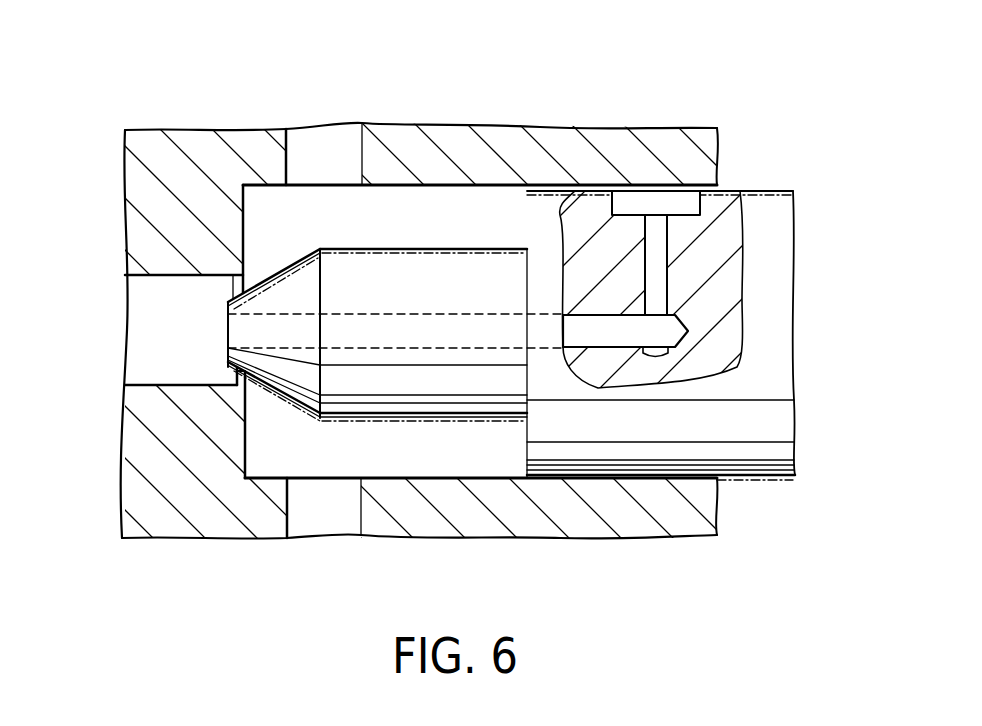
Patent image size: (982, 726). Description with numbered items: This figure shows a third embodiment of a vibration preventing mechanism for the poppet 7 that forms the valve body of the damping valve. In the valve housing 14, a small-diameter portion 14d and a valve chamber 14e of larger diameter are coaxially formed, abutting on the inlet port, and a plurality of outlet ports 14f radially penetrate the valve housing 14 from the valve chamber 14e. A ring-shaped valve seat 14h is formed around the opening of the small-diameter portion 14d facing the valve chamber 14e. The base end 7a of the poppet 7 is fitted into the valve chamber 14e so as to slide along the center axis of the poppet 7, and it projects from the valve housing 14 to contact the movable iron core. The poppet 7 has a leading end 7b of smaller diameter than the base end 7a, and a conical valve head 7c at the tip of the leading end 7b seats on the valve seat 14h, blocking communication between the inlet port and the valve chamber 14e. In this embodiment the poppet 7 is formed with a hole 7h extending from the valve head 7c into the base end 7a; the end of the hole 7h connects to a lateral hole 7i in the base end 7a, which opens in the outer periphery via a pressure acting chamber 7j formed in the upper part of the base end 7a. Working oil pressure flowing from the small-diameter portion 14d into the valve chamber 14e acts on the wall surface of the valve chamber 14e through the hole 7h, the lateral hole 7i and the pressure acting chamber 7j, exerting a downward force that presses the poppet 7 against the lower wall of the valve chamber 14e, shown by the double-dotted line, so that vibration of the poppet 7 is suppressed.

The valve housing 14 is at (150, 122).
The small-diameter portion 14d is at (148, 323).
The valve chamber 14e is at (480, 207).
The outlet port 14f is at (325, 510).
The valve seat 14h is at (238, 388).
The poppet 7 is at (605, 327).
The base end 7a is at (744, 196).
The leading end 7b is at (399, 249).
The valve head 7c is at (272, 268).
The hole 7h is at (606, 330).
The lateral hole 7i is at (650, 278).
The pressure acting chamber 7j is at (653, 207).